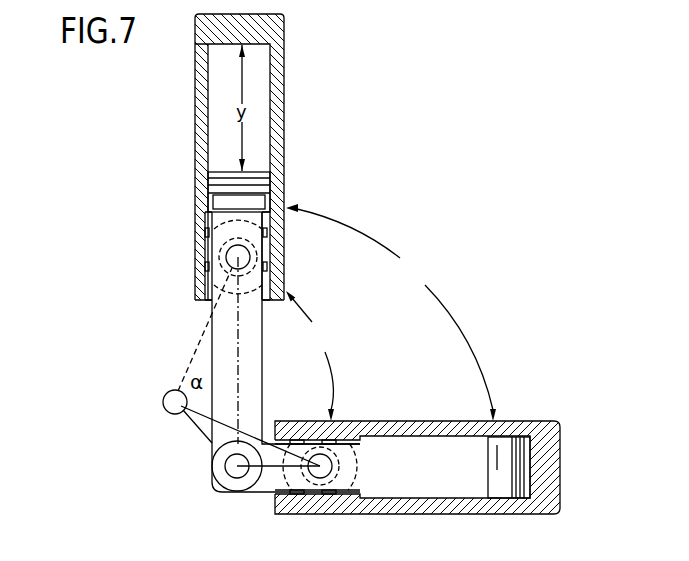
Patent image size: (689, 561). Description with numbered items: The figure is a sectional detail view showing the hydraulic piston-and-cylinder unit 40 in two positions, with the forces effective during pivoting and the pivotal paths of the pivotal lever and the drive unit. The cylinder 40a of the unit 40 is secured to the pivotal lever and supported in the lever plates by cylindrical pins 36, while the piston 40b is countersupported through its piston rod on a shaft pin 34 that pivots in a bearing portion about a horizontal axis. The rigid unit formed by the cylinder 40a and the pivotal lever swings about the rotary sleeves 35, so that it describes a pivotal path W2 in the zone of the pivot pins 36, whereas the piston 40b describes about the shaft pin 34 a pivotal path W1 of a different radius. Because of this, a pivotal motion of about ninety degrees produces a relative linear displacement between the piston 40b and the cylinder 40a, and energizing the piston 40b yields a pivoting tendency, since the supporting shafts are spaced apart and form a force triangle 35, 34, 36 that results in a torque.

The shaft pin 34 is at (234, 468).
The rotary sleeves 35 is at (172, 389).
The cylindrical pins 36 is at (240, 258).
The hydraulic piston-and-cylinder unit 40 is at (297, 38).
The cylinder 40a is at (276, 82).
The piston 40b is at (220, 177).
The pivotal path w1 W1 is at (391, 312).
The pivotal path w2 W2 is at (310, 356).